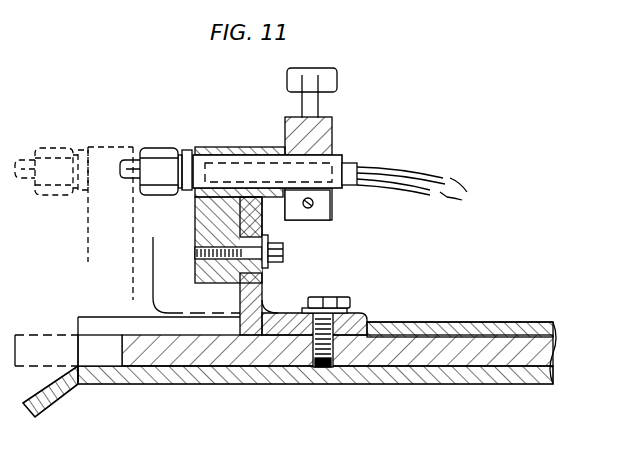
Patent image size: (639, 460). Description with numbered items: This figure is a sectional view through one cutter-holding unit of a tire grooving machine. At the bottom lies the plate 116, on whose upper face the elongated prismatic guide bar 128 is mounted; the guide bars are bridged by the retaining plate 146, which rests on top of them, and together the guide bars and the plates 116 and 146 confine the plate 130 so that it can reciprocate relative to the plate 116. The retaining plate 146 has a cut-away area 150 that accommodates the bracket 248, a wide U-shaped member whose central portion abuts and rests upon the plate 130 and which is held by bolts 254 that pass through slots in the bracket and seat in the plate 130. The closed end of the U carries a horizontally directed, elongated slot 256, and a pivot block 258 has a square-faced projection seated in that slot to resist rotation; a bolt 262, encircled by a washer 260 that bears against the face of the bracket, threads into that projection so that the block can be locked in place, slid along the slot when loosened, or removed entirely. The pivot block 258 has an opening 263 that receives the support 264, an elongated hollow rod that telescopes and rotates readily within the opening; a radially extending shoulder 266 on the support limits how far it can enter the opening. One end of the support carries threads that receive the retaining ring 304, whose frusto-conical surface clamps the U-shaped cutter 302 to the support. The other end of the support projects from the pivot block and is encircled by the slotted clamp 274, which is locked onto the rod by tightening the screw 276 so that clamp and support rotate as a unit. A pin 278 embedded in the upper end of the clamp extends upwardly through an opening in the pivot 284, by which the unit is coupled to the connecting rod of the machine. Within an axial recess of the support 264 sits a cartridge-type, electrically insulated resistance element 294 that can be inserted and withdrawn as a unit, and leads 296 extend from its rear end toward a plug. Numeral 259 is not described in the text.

The plate 116 is at (448, 385).
The guide bar 128 is at (108, 358).
The plate 130 is at (507, 362).
The retaining plate 146 is at (484, 322).
The cut-away area 150 is at (397, 323).
The bracket 248 is at (366, 318).
The bolt 254 is at (336, 298).
The slot 256 is at (266, 290).
The pivot block 258 is at (201, 288).
The bracket block 259 is at (100, 272).
The washer 260 is at (263, 240).
The bolt 262 is at (283, 256).
The opening 263 is at (207, 147).
The support 264 is at (244, 170).
The shoulder 266 is at (192, 196).
The slotted clamp 274 is at (333, 124).
The screw 276 is at (313, 203).
The pin 278 is at (318, 104).
The pivot 284 is at (337, 77).
The resistance element 294 is at (347, 163).
The leads 296 is at (471, 197).
The U-shaped cutter 302 is at (131, 179).
The retaining ring 304 is at (70, 150).